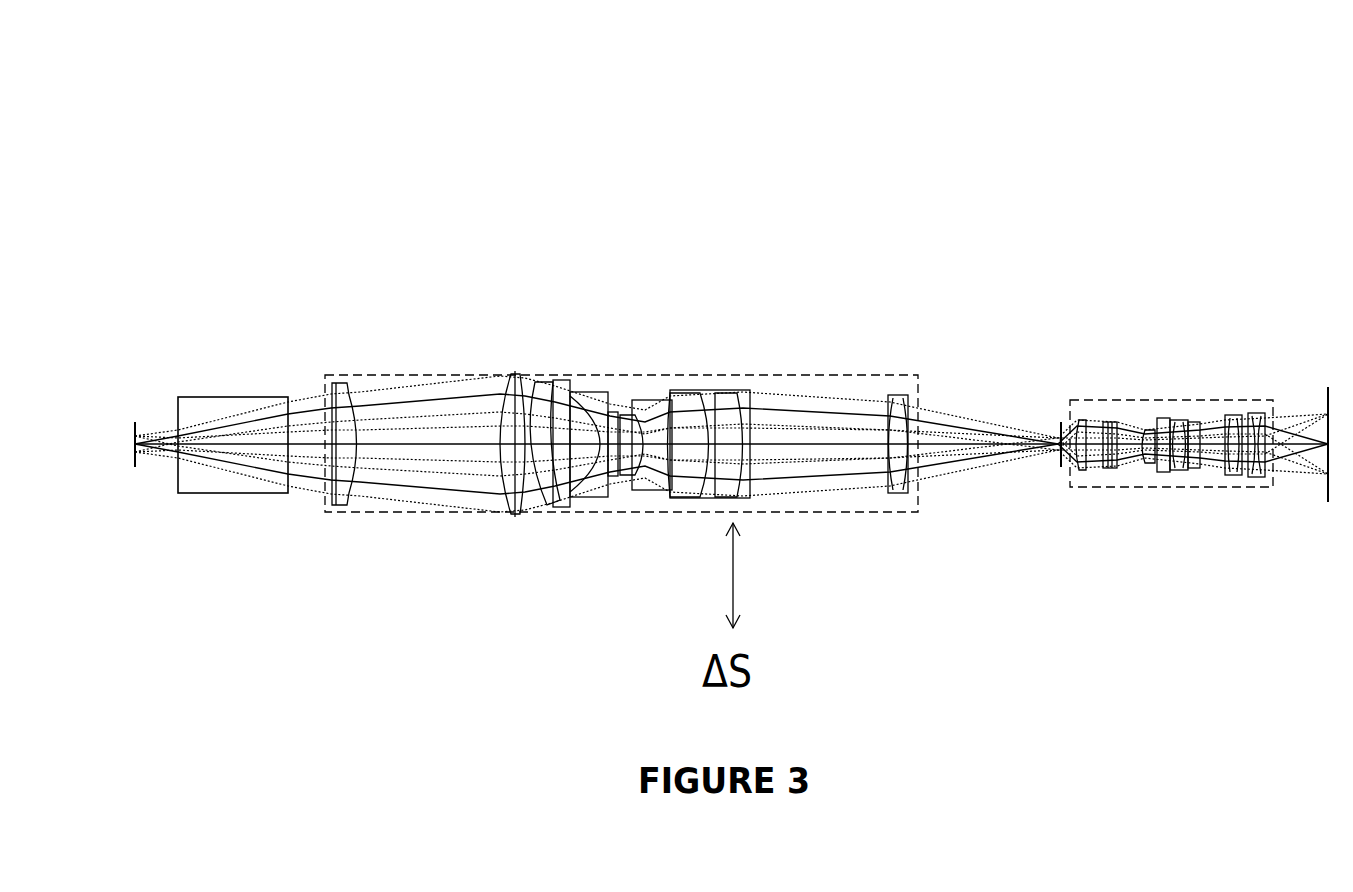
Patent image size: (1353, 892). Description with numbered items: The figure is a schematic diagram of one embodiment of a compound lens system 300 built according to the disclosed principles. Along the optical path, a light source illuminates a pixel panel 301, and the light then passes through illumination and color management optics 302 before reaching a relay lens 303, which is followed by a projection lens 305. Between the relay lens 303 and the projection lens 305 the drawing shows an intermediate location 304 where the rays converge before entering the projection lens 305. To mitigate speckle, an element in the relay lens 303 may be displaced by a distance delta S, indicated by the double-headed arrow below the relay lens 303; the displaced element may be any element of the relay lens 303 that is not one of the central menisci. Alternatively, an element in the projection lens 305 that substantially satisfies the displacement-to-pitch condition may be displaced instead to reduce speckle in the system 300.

The compound lens system 300 is at (1110, 181).
The pixel panel 301 is at (127, 447).
The illumination and color management optics 302 is at (263, 397).
The relay lens 303 is at (636, 374).
The intermediate image plane 304 is at (1017, 411).
The projection lens 305 is at (1210, 412).